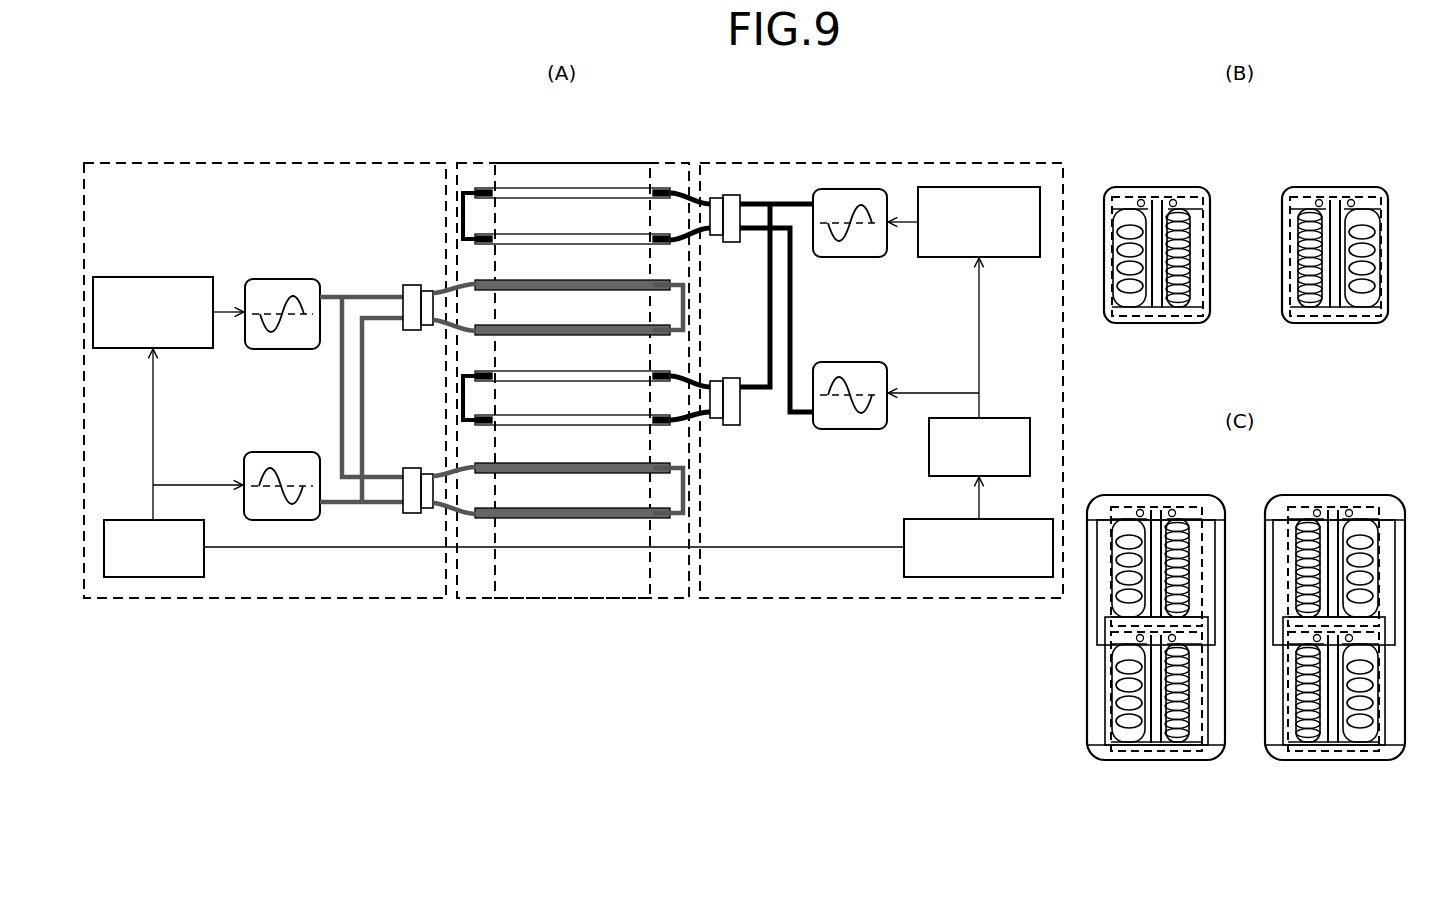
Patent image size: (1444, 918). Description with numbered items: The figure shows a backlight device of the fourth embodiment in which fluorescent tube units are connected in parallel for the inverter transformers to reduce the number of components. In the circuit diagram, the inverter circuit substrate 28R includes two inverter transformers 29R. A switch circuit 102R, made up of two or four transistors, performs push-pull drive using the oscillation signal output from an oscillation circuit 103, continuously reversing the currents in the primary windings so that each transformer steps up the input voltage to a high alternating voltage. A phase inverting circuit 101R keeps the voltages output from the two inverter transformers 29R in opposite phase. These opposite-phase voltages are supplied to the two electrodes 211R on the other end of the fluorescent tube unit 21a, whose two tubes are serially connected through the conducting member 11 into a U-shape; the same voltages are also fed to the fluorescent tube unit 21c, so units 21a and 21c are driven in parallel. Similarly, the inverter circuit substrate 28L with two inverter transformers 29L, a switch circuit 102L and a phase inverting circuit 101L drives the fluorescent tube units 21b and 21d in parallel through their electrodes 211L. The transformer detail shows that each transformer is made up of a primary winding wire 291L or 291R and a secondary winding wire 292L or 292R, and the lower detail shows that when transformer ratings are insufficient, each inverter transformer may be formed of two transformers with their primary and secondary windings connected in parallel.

The inverter circuit substrate 28L is at (172, 162).
The inverter circuit substrate 28R is at (892, 162).
The phase inverting circuit 101L is at (171, 277).
The phase inverting circuit 101R is at (957, 258).
The switch circuit 102L is at (130, 520).
The switch circuit 102R is at (993, 418).
The oscillation circuit 103 is at (950, 519).
The inverter transformer 29L is at (289, 279).
The inverter transformer 29R is at (866, 258).
The conducting member 11 is at (462, 216).
The electrode 211L is at (470, 320).
The electrode 211R is at (674, 200).
The fluorescent tube unit 21a is at (533, 235).
The fluorescent tube unit 21b is at (553, 328).
The fluorescent tube unit 21c is at (573, 418).
The fluorescent tube unit 21d is at (592, 511).
The primary winding wire 291L is at (1122, 200).
The secondary winding wire 292L is at (1186, 200).
The secondary winding wire 292R is at (1302, 200).
The primary winding wire 291R is at (1372, 200).